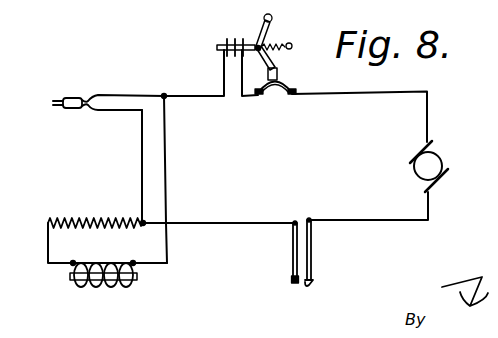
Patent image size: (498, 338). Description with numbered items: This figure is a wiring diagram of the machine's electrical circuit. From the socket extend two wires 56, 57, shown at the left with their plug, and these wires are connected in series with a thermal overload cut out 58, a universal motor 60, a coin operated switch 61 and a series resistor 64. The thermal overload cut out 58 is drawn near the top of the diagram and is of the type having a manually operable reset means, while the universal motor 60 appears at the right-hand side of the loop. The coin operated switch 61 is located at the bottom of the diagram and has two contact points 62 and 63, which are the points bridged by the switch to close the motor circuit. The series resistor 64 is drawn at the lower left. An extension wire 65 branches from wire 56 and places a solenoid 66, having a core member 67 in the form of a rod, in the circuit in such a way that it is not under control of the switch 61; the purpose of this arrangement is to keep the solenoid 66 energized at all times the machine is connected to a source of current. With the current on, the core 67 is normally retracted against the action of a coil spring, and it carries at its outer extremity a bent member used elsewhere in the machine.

The wire 56 is at (123, 97).
The wire 57 is at (112, 112).
The thermal overload cut out 58 is at (272, 64).
The universal motor 60 is at (441, 153).
The coin operated switch 61 is at (311, 256).
The contact point 62 is at (308, 283).
The contact point 63 is at (297, 284).
The series resistor 64 is at (96, 220).
The extension wire 65 is at (167, 174).
The solenoid 66 is at (128, 288).
The core member 67 is at (137, 276).